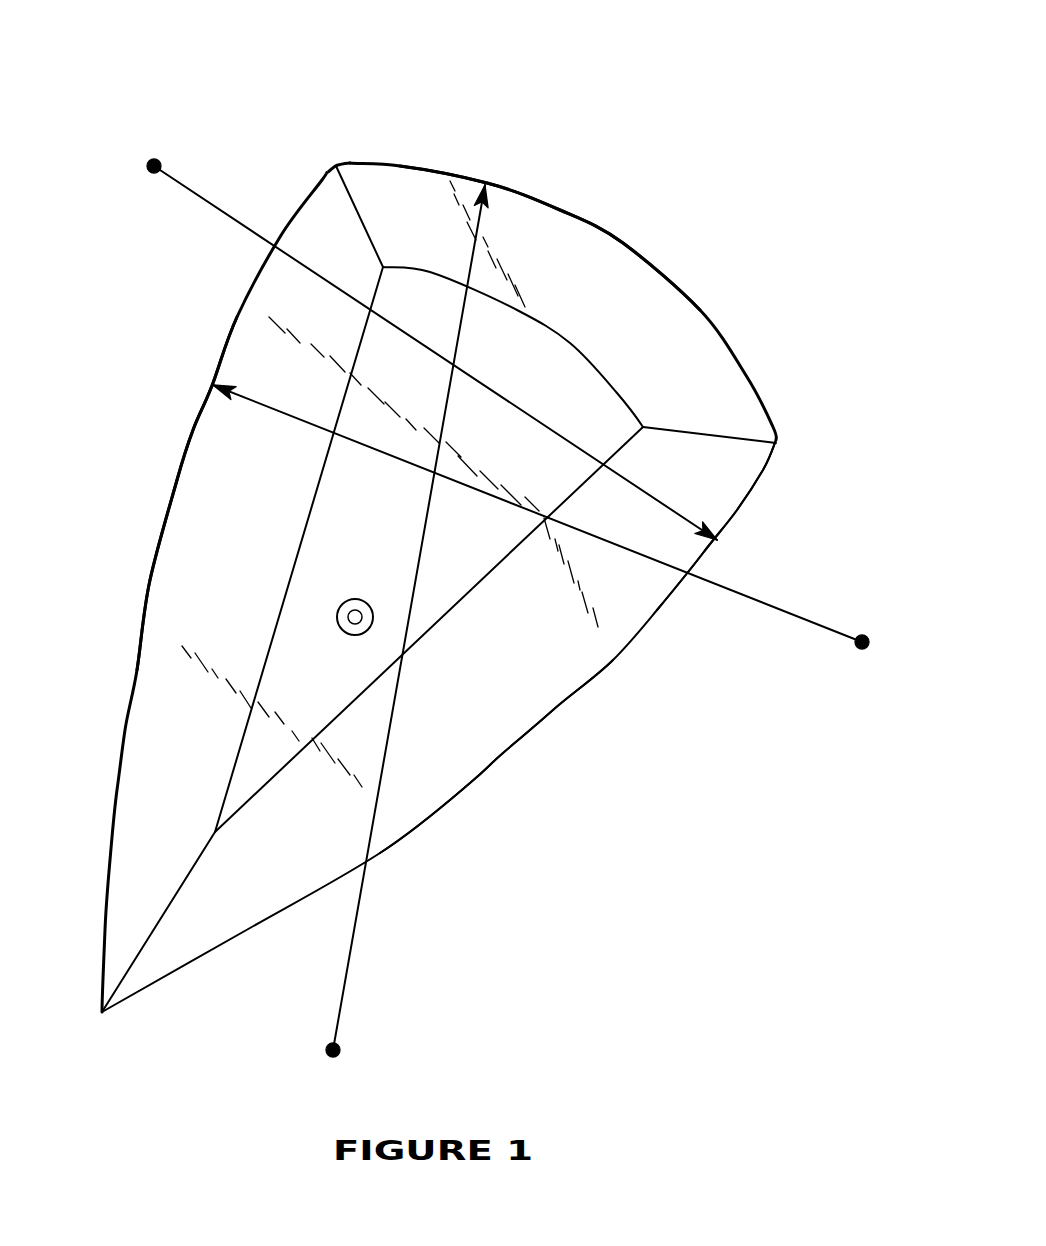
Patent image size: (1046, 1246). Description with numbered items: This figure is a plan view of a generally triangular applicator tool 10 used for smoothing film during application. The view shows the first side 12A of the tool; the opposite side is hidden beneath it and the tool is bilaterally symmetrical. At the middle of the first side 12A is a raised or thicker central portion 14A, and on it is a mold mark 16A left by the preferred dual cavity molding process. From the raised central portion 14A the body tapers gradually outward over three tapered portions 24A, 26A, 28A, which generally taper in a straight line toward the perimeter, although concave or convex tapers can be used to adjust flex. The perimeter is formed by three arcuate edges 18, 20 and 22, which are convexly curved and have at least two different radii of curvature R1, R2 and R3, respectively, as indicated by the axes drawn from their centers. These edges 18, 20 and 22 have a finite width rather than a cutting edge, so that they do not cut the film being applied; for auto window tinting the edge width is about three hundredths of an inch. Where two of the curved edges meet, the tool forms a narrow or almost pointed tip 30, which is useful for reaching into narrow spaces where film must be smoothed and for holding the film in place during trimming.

The applicator tool 10 is at (667, 100).
The first side 12A is at (573, 367).
The raised central portion 14A is at (480, 550).
The mold mark 16A is at (355, 617).
The arcuate edge 18 is at (623, 243).
The arcuate edge 20 is at (178, 476).
The arcuate edge 22 is at (743, 508).
The tapered portion 24A is at (715, 385).
The tapered portion 26A is at (712, 470).
The tapered portion 28A is at (172, 693).
The tip 30 is at (105, 1013).
The radius of curvature R1 is at (407, 621).
The radius of curvature R2 is at (541, 521).
The radius of curvature R3 is at (432, 347).